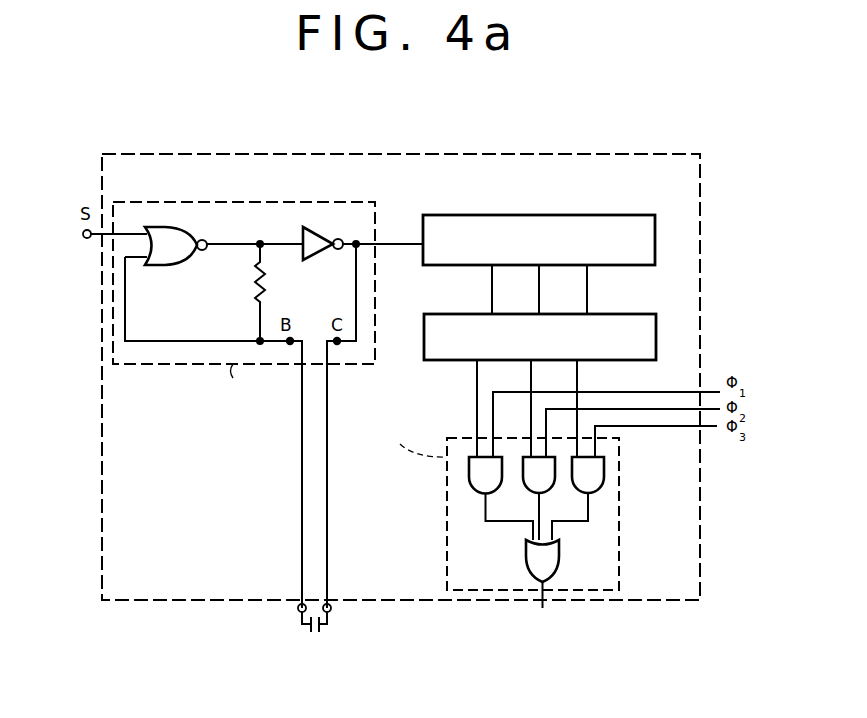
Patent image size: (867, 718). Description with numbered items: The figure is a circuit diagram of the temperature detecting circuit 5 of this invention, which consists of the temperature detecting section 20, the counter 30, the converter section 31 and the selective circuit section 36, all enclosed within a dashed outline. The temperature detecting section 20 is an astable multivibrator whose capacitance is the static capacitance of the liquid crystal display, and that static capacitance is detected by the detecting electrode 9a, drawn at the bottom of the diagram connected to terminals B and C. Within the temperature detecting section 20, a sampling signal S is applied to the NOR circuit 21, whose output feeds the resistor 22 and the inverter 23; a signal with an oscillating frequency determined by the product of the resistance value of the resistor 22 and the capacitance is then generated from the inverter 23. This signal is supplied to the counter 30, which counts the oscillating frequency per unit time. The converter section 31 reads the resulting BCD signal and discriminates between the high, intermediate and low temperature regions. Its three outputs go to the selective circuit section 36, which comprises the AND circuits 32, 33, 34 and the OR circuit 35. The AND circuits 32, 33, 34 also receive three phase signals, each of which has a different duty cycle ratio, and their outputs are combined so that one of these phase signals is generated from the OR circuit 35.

The temperature detecting circuit 5 is at (112, 538).
The temperature detecting section 20 is at (268, 364).
The NOR circuit 21 is at (176, 246).
The resistor 22 is at (280, 263).
The inverter 23 is at (313, 229).
The counter 30 is at (572, 215).
The converter section 31 is at (622, 314).
The AND circuit 32 is at (485, 475).
The AND circuit 33 is at (539, 475).
The AND circuit 34 is at (588, 475).
The OR circuit 35 is at (542, 561).
The selective circuit section 36 is at (447, 527).
The detecting electrode 9a is at (318, 634).